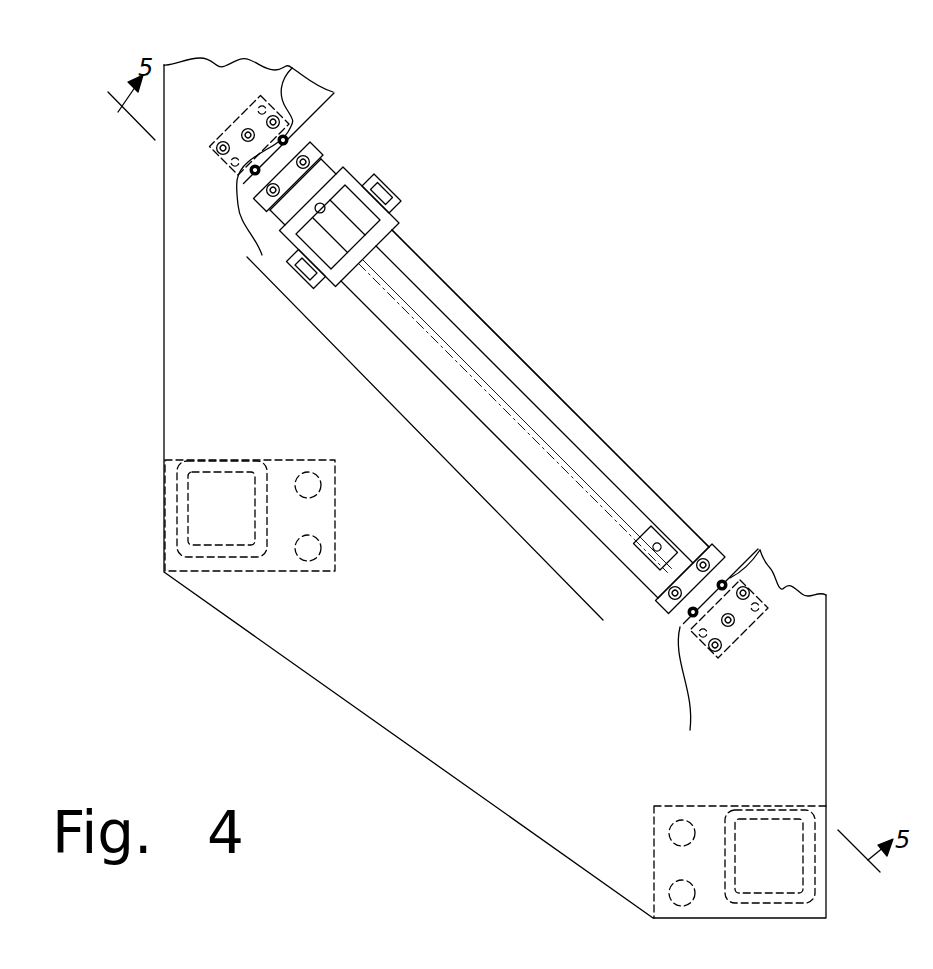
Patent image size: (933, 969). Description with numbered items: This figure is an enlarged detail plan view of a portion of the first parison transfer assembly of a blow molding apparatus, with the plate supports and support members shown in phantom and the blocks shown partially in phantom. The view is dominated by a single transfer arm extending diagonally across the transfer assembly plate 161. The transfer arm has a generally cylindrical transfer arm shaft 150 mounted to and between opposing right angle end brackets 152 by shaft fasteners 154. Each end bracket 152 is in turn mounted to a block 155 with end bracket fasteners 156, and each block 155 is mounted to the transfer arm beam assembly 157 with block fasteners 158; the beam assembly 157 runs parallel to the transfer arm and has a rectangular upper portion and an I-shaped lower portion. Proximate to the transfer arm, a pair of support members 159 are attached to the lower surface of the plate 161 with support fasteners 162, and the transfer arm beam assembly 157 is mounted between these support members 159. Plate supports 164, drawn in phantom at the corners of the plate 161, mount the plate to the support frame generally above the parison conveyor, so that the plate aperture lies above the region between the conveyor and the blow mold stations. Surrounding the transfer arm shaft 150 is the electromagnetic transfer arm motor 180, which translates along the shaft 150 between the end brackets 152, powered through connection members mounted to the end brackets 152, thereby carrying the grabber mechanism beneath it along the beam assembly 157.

The transfer arm shaft 150 is at (463, 345).
The end bracket 152 is at (320, 166).
The shaft fastener 154 is at (296, 134).
The block 155 is at (250, 178).
The end bracket fastener 156 is at (308, 157).
The transfer arm beam assembly 157 is at (576, 414).
The block fastener 158 is at (292, 70).
The support member 159 is at (240, 125).
The transfer assembly plate 161 is at (487, 674).
The support fastener 162 is at (279, 139).
The plate support 164 is at (213, 460).
The transfer arm motor 180 is at (398, 218).